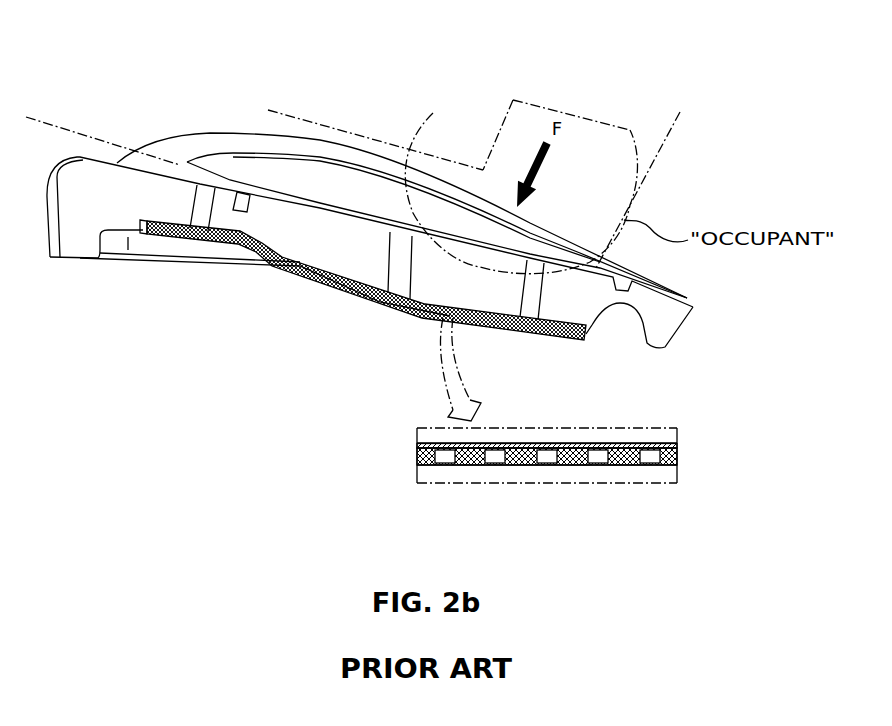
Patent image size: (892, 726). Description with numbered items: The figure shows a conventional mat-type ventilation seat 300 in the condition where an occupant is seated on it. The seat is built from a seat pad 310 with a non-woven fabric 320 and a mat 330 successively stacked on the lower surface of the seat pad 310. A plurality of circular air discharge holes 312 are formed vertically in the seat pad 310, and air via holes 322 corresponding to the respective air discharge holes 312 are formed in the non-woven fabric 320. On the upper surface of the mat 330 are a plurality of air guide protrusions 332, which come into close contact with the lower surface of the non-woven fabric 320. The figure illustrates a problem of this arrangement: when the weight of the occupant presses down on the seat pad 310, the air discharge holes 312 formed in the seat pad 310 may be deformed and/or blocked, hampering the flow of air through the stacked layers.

The mat-type ventilation seat 300 is at (172, 128).
The seat pad 310 is at (236, 128).
The air discharge hole 312 is at (393, 275).
The non-woven fabric 320 is at (597, 432).
The air via hole 322 is at (533, 446).
The mat 330 is at (267, 260).
The air guide protrusion 332 is at (562, 455).